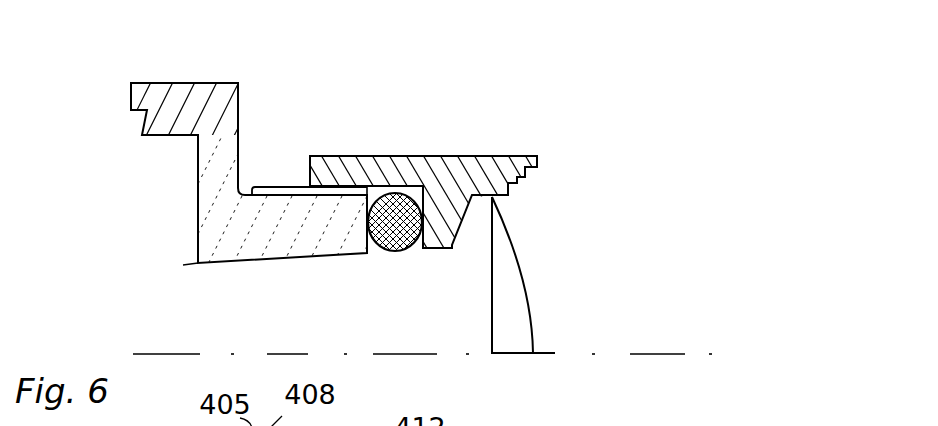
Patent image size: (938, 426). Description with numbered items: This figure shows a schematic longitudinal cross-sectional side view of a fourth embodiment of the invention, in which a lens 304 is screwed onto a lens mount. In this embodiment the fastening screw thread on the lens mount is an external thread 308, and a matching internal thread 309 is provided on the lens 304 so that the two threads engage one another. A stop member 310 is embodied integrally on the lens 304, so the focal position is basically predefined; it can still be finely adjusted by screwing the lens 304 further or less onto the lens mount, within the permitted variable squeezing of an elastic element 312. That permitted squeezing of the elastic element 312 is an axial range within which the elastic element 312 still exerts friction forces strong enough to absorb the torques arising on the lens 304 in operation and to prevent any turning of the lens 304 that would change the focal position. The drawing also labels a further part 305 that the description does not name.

The lens 304 is at (489, 146).
The housing 305 is at (283, 217).
The external thread 308 is at (292, 193).
The internal thread 309 is at (392, 195).
The stop member 310 is at (436, 248).
The elastic element 312 is at (414, 193).